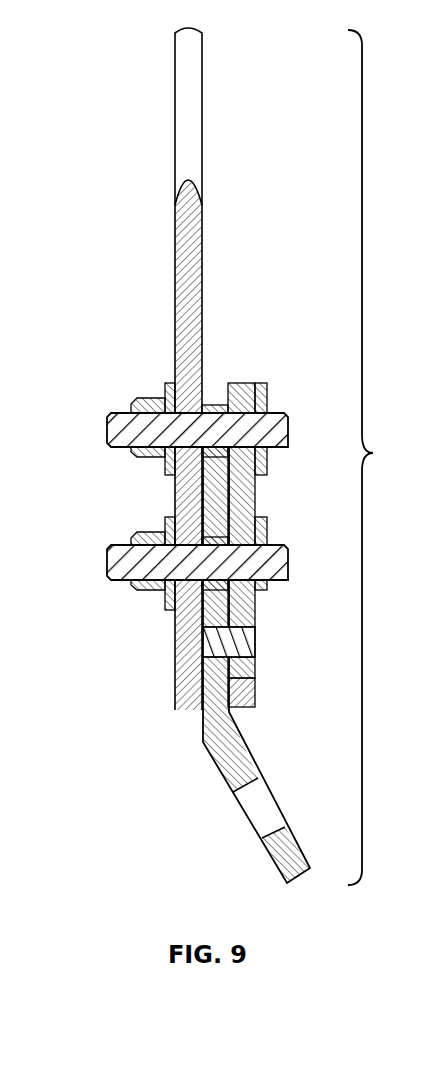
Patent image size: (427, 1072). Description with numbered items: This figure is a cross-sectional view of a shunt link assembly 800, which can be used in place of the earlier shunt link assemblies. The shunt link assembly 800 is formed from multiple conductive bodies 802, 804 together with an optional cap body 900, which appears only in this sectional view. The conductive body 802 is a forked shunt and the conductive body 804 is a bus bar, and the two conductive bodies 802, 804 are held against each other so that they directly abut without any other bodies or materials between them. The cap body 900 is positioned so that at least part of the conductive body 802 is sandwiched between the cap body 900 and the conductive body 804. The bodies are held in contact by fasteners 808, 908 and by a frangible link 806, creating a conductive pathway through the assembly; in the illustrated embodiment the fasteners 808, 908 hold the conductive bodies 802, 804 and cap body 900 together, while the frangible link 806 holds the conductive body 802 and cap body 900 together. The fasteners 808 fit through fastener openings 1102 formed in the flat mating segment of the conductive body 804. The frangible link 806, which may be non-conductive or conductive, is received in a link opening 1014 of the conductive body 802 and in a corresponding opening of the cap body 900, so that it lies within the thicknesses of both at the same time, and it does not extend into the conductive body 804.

The shunt link assembly 800 is at (381, 457).
The conductive body 802 is at (210, 774).
The conductive body 804 is at (160, 273).
The frangible link 806 is at (238, 647).
The fasteners 808 is at (215, 430).
The cap body 900 is at (246, 373).
The fasteners 908 is at (147, 459).
The fastener openings 1102 is at (131, 447).
The link opening 1014 is at (203, 663).